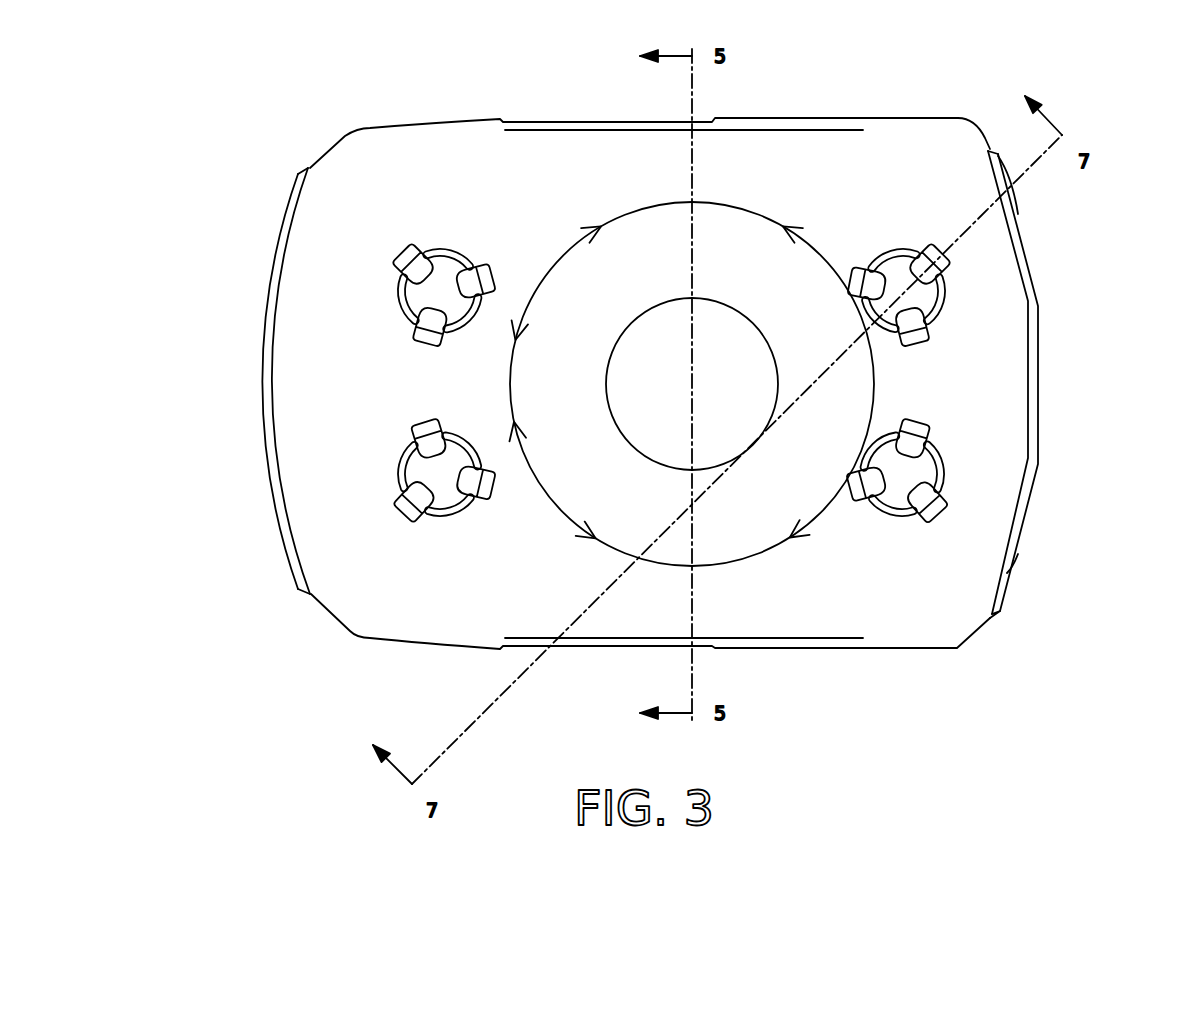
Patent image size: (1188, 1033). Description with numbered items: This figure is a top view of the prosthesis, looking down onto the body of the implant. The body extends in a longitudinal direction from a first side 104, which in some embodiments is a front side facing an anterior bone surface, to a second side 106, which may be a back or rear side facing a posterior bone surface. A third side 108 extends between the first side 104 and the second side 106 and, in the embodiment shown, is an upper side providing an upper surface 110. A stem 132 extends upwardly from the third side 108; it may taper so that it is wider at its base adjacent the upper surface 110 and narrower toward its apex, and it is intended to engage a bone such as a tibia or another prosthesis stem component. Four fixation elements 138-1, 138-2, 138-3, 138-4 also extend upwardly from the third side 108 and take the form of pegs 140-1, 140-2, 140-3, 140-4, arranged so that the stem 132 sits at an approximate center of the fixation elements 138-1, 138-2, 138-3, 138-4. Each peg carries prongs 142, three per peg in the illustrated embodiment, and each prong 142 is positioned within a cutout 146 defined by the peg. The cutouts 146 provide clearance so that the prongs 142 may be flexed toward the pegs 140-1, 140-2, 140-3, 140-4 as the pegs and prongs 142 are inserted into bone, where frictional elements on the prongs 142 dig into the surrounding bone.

The first side 104 is at (1040, 398).
The second side 106 is at (262, 380).
The third side 108 is at (863, 590).
The upper surface 110 is at (607, 262).
The stem 132 is at (740, 310).
The fixation element 138-1 is at (955, 522).
The fixation element 138-2 is at (925, 228).
The fixation element 138-3 is at (375, 532).
The fixation element 138-4 is at (397, 220).
The peg 140-1 is at (917, 470).
The peg 140-2 is at (927, 300).
The peg 140-3 is at (422, 470).
The peg 140-4 is at (354, 209).
The prong 142 is at (426, 326).
The cutout 146 is at (426, 320).